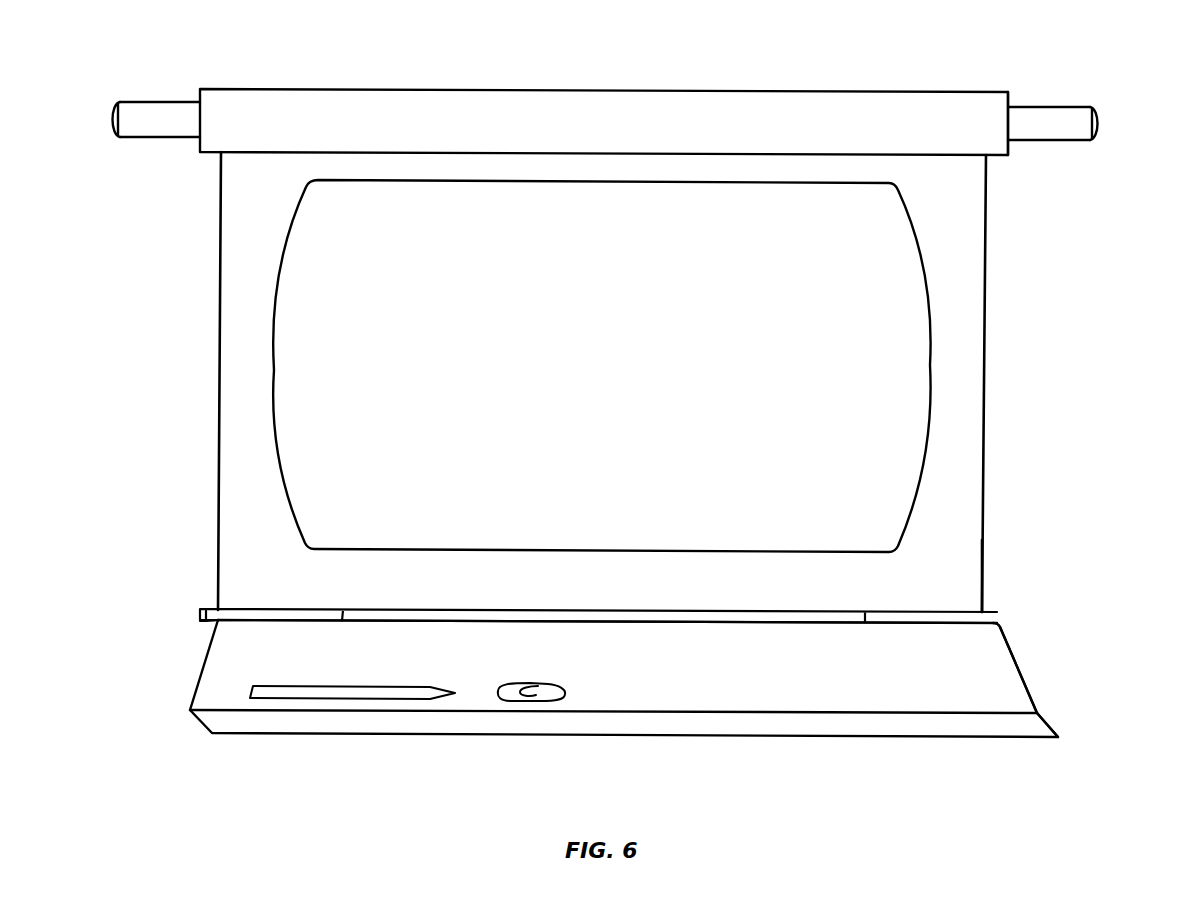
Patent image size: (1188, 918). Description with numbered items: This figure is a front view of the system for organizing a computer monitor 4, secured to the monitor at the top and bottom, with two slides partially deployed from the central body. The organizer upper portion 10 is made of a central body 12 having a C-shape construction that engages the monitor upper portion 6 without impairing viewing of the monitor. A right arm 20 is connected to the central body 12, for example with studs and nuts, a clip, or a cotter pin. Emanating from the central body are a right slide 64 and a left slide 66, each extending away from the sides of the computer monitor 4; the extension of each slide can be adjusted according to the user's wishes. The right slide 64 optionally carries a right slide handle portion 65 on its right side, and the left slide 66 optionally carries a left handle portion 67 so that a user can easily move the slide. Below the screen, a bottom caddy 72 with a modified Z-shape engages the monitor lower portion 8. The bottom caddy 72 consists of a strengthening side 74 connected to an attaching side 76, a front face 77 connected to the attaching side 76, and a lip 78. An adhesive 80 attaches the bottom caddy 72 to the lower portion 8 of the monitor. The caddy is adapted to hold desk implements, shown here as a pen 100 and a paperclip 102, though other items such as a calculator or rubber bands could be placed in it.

The organizer upper portion 10 is at (940, 55).
The central body 12 is at (270, 88).
The right arm 20 is at (1005, 90).
The computer monitor 4 is at (986, 347).
The monitor upper portion 6 is at (963, 220).
The monitor lower portion 8 is at (960, 552).
The right slide 64 is at (1048, 142).
The right slide handle portion 65 is at (1100, 122).
The left slide 66 is at (162, 138).
The left handle portion 67 is at (112, 120).
The bottom caddy 72 is at (191, 660).
The strengthening side 74 is at (200, 615).
The attaching side 76 is at (212, 620).
The front face 77 is at (1020, 668).
The lip 78 is at (1038, 727).
The adhesive 80 is at (740, 617).
The pen 100 is at (333, 692).
The paperclip 102 is at (567, 694).